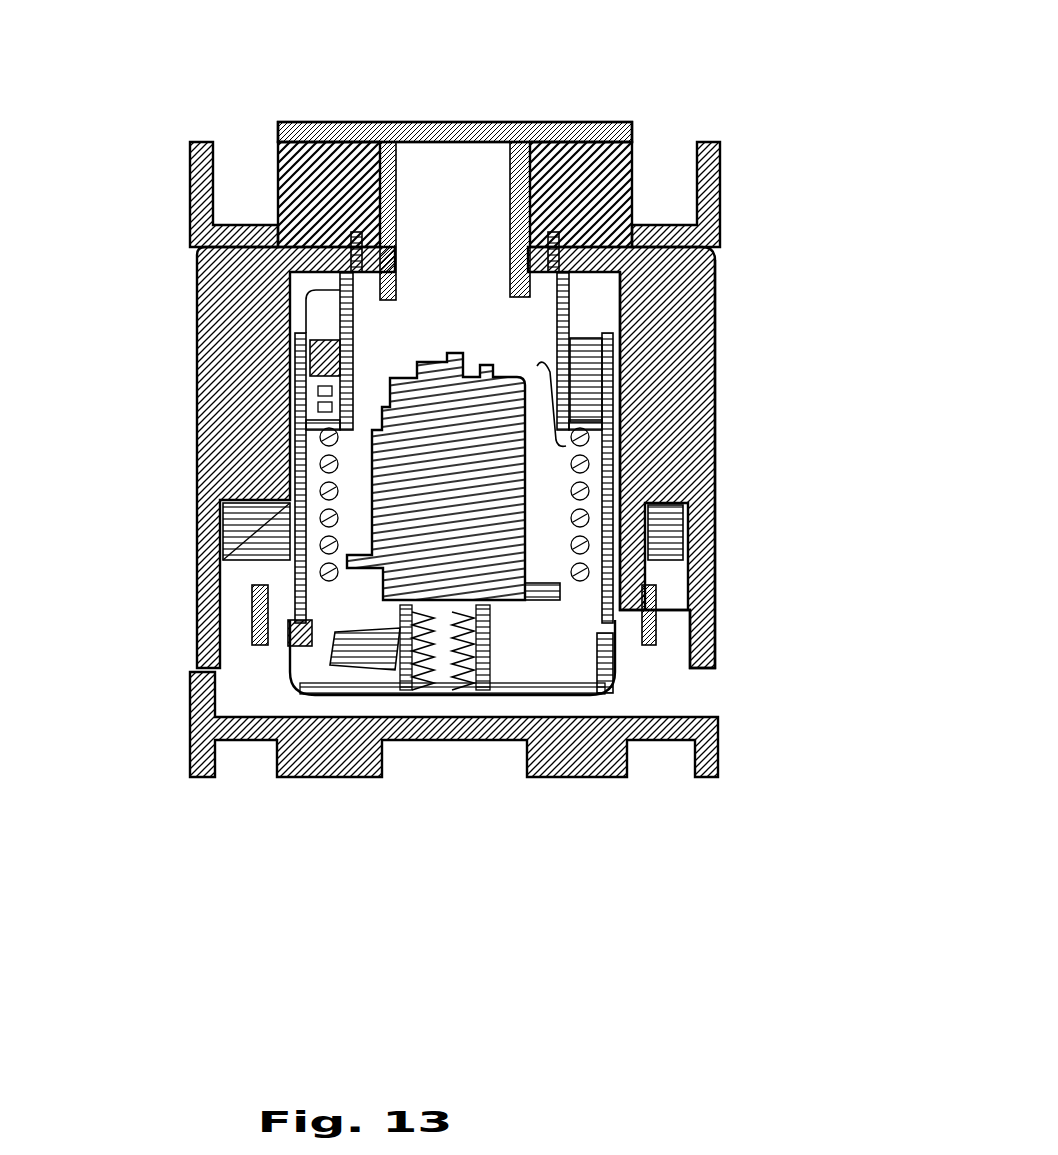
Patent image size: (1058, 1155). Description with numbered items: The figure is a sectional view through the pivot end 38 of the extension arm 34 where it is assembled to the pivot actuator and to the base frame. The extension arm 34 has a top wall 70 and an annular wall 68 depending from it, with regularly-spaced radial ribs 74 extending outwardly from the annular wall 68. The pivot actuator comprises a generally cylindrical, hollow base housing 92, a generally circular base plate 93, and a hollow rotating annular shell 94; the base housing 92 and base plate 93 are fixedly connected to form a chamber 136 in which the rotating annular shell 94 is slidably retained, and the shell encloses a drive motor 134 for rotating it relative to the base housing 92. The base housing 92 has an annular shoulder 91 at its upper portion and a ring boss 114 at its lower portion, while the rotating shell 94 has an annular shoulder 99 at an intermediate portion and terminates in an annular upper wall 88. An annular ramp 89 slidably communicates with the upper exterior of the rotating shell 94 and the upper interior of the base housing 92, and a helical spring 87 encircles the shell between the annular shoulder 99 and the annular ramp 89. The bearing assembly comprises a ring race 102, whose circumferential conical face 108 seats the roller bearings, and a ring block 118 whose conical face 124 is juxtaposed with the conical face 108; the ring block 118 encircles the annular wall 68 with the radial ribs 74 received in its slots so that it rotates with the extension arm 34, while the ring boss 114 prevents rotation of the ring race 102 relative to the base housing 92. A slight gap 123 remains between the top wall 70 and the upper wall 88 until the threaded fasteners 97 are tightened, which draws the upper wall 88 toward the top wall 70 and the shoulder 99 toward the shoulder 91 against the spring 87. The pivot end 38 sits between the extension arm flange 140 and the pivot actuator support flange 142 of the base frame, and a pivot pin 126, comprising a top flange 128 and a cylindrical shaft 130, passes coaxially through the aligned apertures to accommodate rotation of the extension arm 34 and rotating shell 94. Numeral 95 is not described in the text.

The pivot pin 126 is at (307, 122).
The top wall 70 is at (343, 243).
The threaded fasteners 97 is at (360, 262).
The top flange 128 is at (522, 135).
The cylindrical shaft 130 is at (577, 220).
The rotating annular shell 94 is at (636, 192).
The extension arm flange 140 is at (722, 172).
The annular ramp 89 is at (720, 210).
The base housing 92 is at (625, 338).
The annular shoulder 99 is at (625, 371).
The extension arm 34 is at (630, 360).
The guide block 95 is at (620, 434).
The annular wall 68 is at (280, 478).
The pivot end 38 is at (716, 432).
The ring block 118 is at (705, 505).
The ring boss 114 is at (700, 535).
The conical face 124 is at (700, 585).
The conical face 108 is at (715, 577).
The ring race 102 is at (718, 593).
The drive motor 134 is at (500, 545).
The pivot actuator support flange 142 is at (625, 775).
The base plate 93 is at (300, 672).
The radial ribs 74 is at (225, 495).
The helical spring 87 is at (290, 380).
The annular shoulder 91 is at (313, 330).
The gap 123 is at (290, 272).
The annular upper wall 88 is at (364, 253).
The chamber 136 is at (444, 337).